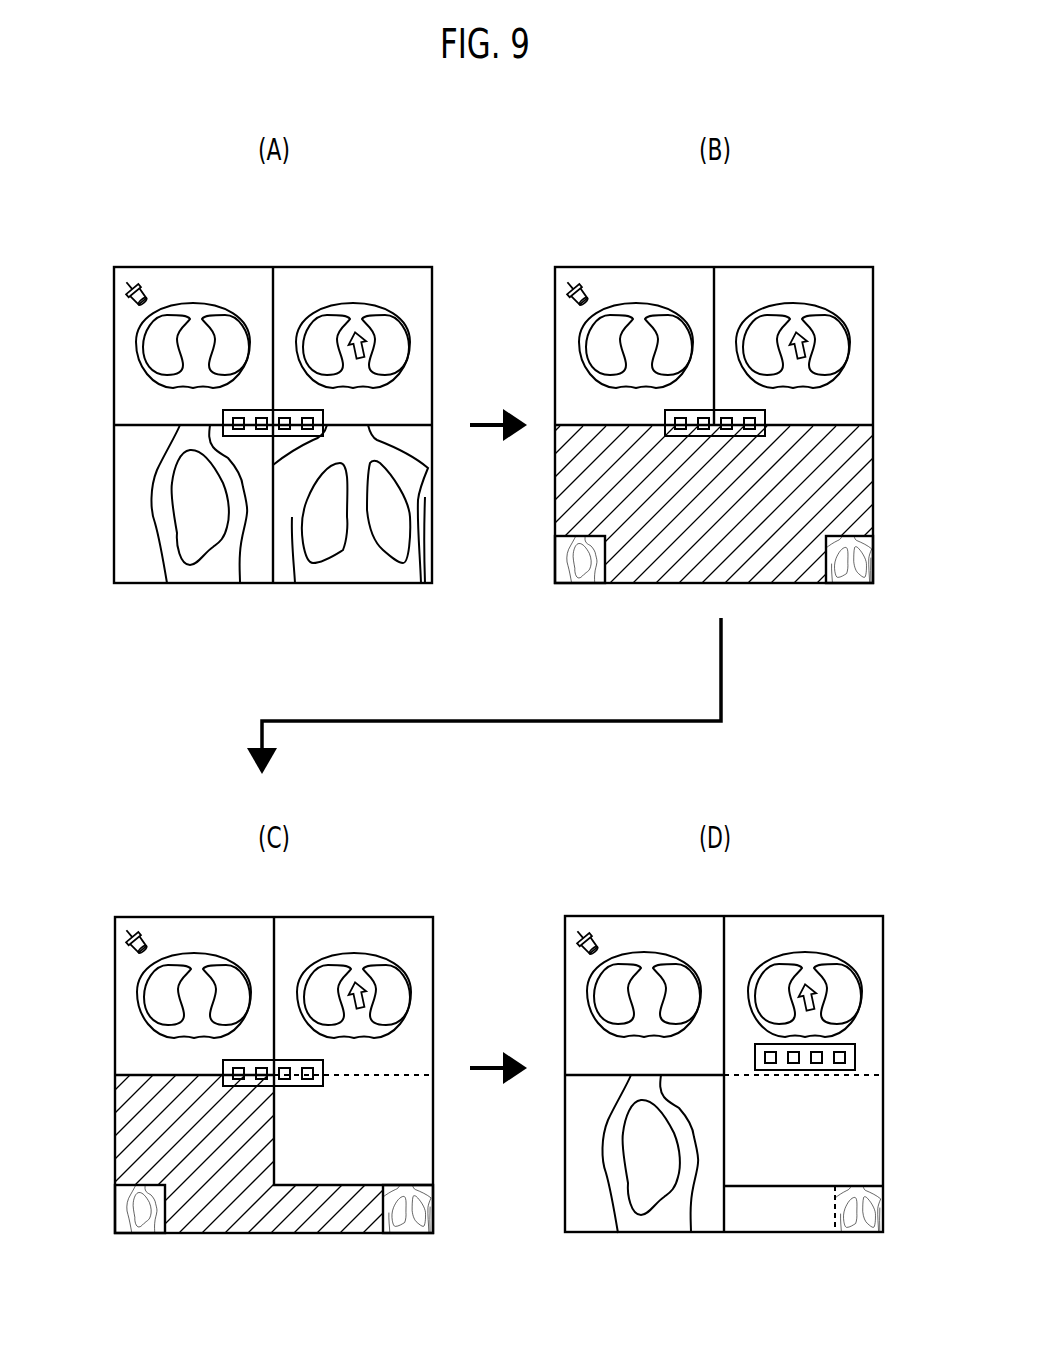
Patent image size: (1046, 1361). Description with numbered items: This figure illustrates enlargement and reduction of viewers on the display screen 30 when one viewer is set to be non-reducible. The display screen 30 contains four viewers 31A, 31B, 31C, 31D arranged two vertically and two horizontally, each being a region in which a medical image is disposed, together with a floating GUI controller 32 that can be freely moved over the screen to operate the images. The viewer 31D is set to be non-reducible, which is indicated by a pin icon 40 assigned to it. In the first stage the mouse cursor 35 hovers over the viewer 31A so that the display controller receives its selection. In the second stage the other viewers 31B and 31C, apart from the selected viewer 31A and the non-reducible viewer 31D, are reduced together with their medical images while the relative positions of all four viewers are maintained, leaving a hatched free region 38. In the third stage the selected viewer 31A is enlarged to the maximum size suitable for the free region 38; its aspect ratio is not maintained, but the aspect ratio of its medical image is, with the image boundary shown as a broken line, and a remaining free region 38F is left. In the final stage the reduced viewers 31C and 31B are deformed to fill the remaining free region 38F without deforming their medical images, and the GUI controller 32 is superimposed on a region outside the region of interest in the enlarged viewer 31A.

The display screen 30 is at (144, 266).
The viewer 31A is at (348, 280).
The viewer 31B is at (358, 577).
The viewer 31C is at (197, 577).
The viewer 31D is at (187, 280).
The GUI controller 32 is at (325, 416).
The mouse cursor 35 is at (366, 350).
The free region 38 is at (856, 474).
The remaining free region 38F is at (291, 1228).
The pin icon 40 is at (126, 305).